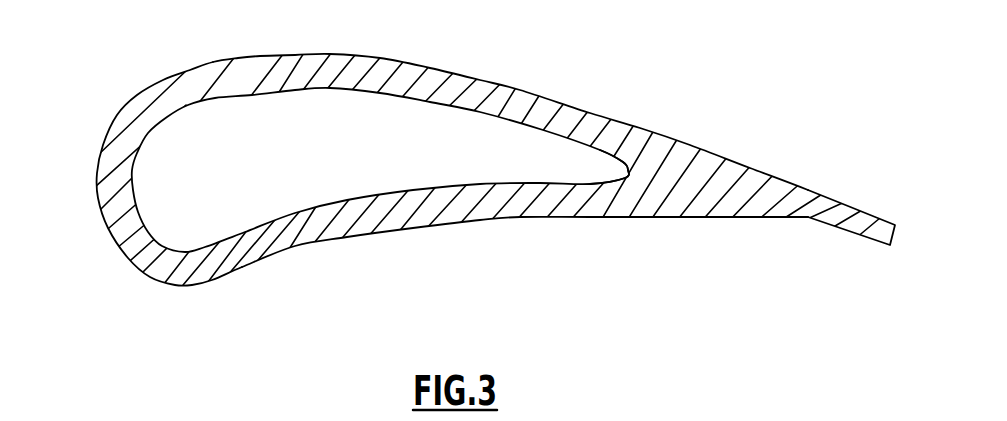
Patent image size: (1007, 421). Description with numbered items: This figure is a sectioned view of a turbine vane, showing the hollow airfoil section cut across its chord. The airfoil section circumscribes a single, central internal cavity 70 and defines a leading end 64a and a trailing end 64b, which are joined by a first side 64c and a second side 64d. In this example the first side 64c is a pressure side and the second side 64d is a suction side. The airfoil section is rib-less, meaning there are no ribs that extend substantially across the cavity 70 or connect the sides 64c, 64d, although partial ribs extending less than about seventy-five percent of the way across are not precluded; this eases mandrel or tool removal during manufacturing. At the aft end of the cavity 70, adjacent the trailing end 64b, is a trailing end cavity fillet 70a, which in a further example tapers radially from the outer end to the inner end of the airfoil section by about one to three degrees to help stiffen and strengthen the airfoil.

The leading end 64a is at (110, 222).
The trailing end 64b is at (857, 211).
The first side 64c is at (368, 230).
The second side 64d is at (478, 78).
The internal cavity 70 is at (318, 157).
The trailing end cavity fillet 70a is at (627, 170).